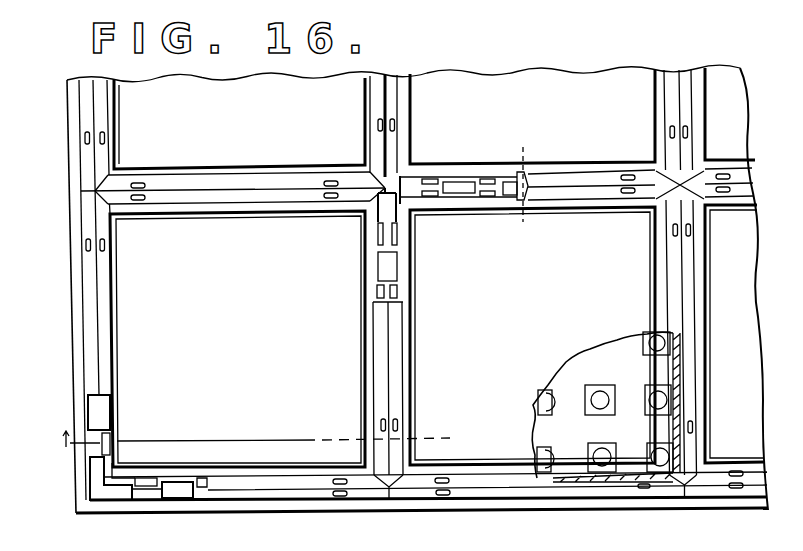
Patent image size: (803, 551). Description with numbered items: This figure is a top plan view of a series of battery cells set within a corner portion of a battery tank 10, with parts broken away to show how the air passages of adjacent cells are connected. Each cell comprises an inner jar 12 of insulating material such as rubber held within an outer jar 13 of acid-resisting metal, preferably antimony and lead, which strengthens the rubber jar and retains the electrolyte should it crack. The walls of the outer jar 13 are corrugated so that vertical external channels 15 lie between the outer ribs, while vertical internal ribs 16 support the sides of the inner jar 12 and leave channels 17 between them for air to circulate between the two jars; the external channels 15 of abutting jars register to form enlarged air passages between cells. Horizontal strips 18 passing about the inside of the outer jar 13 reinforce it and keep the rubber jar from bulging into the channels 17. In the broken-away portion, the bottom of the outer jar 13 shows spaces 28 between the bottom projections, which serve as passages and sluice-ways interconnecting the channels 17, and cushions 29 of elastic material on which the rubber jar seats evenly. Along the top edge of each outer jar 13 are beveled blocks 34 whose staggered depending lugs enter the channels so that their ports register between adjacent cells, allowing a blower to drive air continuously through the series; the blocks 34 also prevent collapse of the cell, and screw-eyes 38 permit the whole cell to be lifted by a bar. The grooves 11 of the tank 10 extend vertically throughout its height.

The battery tank 10 is at (106, 515).
The internal vertical grooves 11 is at (88, 409).
The inner jar 12 is at (437, 267).
The outer jar 13 is at (393, 238).
The vertical external channels 15 is at (400, 266).
The vertical internal ribs 16 is at (183, 480).
The channels 17 is at (489, 205).
The strips 18 is at (522, 185).
The spaces 28 is at (602, 407).
The cushions 29 is at (583, 424).
The blocks 34 is at (683, 155).
The screw-eyes 38 is at (97, 158).